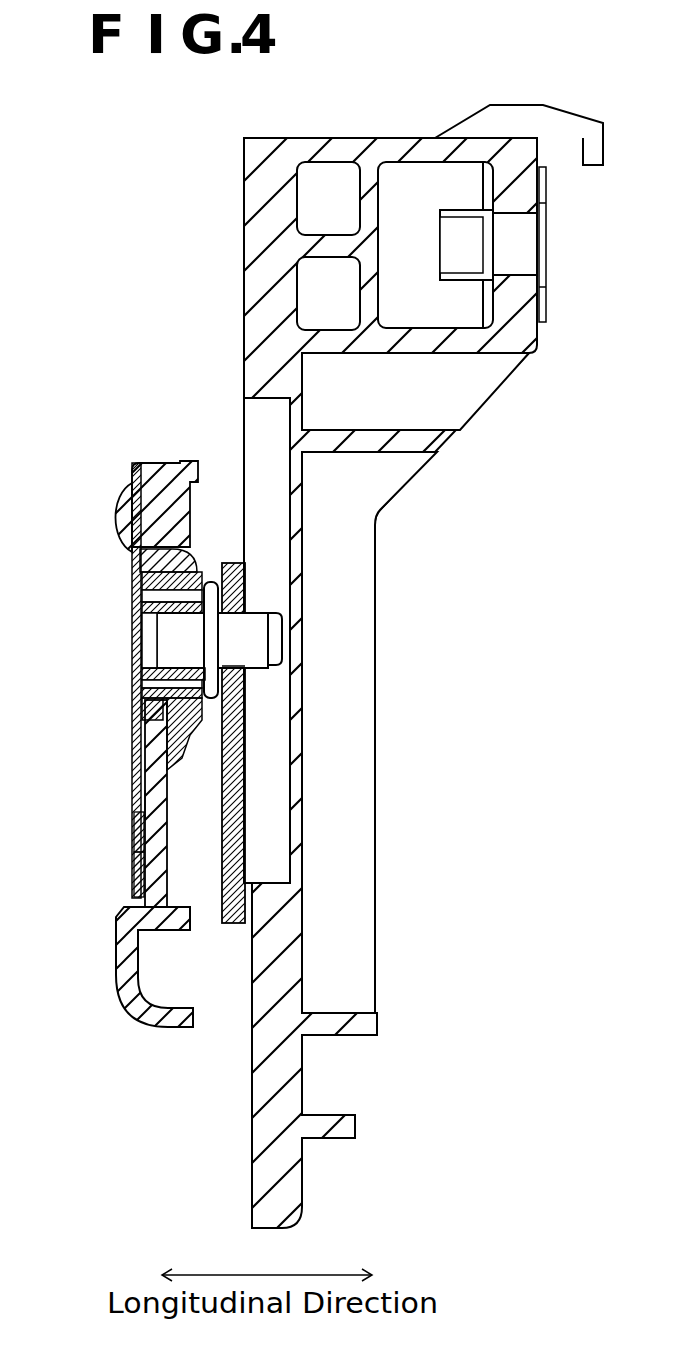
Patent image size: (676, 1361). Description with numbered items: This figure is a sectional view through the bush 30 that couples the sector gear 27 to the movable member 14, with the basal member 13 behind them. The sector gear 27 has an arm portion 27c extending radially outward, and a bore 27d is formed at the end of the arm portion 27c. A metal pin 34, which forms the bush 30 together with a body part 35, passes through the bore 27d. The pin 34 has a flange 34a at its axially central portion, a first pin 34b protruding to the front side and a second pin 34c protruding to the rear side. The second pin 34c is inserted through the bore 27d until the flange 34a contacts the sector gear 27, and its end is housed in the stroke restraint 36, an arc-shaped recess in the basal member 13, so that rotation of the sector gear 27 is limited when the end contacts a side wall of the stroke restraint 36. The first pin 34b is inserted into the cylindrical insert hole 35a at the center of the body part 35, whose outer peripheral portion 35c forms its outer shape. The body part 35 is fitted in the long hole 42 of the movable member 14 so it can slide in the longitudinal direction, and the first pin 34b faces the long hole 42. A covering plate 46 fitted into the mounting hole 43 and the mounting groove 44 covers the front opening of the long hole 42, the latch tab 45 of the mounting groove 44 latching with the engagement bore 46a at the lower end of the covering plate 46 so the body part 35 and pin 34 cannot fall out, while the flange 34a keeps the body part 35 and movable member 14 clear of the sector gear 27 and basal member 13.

The basal member 13 is at (285, 1065).
The movable member 14 is at (122, 958).
The sector gear 27 is at (237, 923).
The arm portion 27c is at (201, 784).
The bore 27d is at (237, 662).
The bush 30 is at (68, 563).
The pin 34 is at (133, 609).
The flange 34a is at (200, 742).
The first pin 34b is at (133, 646).
The second pin 34c is at (268, 625).
The body part 35 is at (133, 571).
The insert hole 35a is at (230, 680).
The outer peripheral portion 35c is at (133, 709).
The stroke restraint 36 is at (245, 402).
The long hole 42 is at (183, 570).
The mounting hole 43 is at (133, 473).
The mounting groove 44 is at (140, 867).
The latch tab 45 is at (140, 818).
The covering plate 46 is at (133, 677).
The engagement bore 46a is at (143, 805).